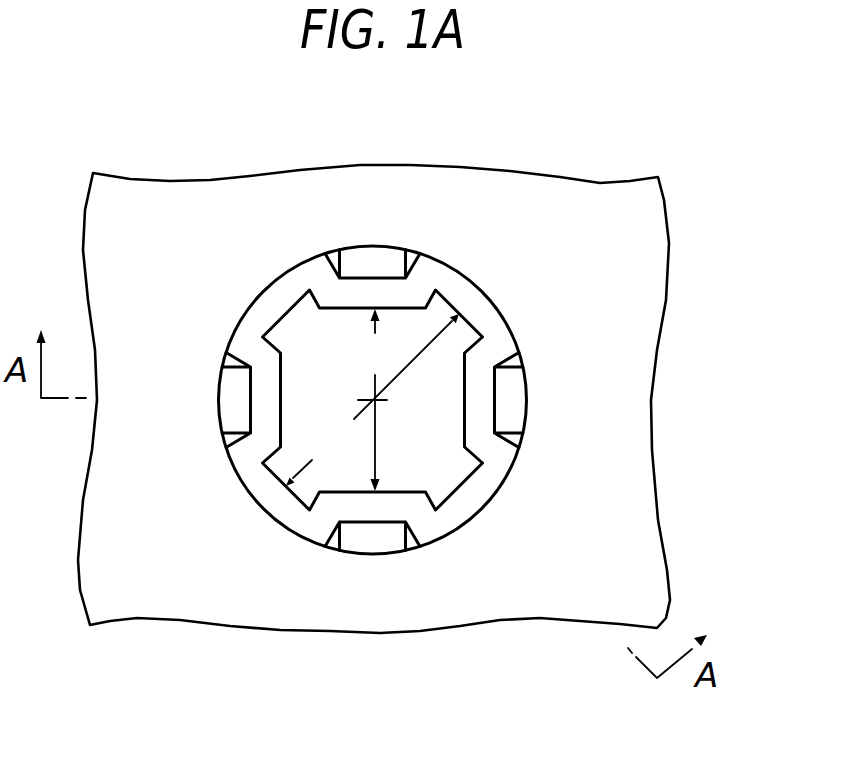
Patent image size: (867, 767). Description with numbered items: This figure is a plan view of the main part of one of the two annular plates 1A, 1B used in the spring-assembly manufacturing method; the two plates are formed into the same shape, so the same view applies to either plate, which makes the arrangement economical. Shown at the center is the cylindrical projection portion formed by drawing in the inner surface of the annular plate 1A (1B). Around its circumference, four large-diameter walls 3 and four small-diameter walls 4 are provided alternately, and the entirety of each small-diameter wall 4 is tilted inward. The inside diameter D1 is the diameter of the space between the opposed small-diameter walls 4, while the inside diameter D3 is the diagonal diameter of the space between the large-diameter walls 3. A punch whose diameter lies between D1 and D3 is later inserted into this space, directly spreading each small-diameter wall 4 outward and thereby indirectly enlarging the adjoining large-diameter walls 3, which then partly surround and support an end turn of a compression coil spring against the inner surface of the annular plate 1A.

The annular plate 1A is at (374, 369).
The annular plate 1B is at (130, 200).
The large-diameter wall 3 is at (288, 292).
The small-diameter wall 4 is at (392, 293).
The inside diameter of space between small-diameter walls D1 is at (406, 400).
The inside diameter of space between large-diameter walls D3 is at (317, 455).